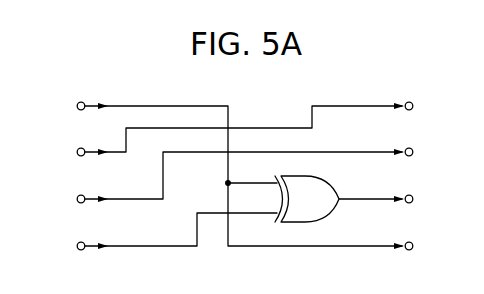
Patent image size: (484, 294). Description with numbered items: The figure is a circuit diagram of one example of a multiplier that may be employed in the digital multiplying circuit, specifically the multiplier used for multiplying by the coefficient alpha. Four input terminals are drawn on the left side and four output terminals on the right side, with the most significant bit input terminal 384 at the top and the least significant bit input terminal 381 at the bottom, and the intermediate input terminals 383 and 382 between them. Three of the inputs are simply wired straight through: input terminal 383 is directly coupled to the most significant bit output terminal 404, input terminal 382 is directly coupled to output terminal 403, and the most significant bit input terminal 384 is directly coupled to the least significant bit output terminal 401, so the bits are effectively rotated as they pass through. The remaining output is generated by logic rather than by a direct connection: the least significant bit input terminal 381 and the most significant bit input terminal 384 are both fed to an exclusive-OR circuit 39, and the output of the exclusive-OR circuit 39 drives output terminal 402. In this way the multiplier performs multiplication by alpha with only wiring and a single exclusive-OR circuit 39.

The input terminal 384 is at (83, 101).
The input terminal 383 is at (78, 152).
The input terminal 382 is at (78, 199).
The input terminal 381 is at (82, 250).
The output terminal 404 is at (411, 101).
The output terminal 403 is at (413, 151).
The output terminal 402 is at (413, 198).
The output terminal 401 is at (409, 250).
The exclusive-OR circuit 39 is at (317, 180).